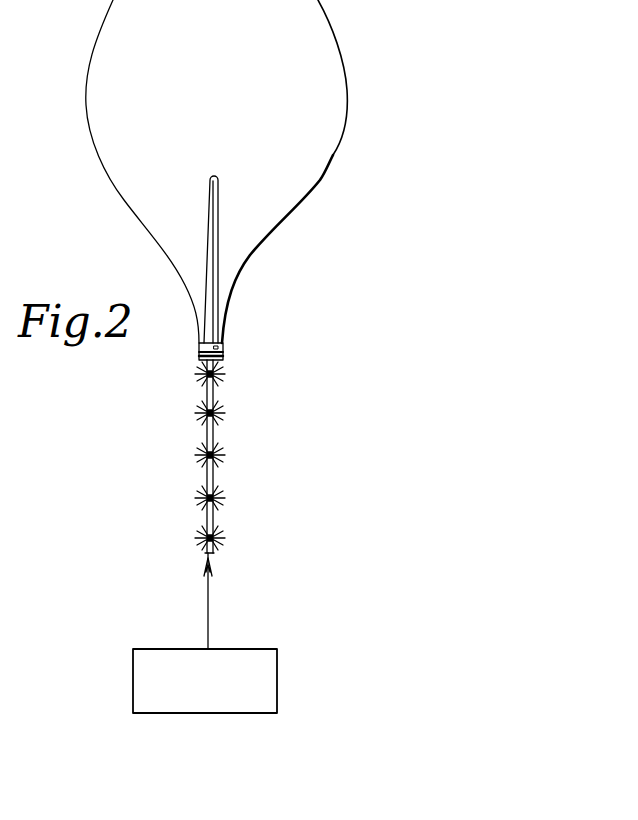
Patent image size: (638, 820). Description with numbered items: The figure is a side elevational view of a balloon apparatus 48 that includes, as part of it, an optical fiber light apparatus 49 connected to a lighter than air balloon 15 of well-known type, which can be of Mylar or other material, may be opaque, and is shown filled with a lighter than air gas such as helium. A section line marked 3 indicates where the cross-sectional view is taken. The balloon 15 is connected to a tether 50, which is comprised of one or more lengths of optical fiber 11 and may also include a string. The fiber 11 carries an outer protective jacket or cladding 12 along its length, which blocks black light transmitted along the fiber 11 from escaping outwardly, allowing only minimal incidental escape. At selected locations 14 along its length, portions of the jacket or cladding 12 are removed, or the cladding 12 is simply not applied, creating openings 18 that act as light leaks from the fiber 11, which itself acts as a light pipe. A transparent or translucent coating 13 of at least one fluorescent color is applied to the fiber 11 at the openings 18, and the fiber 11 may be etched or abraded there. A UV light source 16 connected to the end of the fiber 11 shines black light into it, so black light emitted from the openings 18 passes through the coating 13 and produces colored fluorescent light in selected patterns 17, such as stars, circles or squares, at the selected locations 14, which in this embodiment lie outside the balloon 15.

The section line 3- 3 is at (165, 497).
The optical fiber 11 is at (214, 202).
The outer protective jacket or cladding 12 is at (215, 243).
The transparent or translucent fluorescent coating 13 is at (214, 409).
The selected locations 14 is at (207, 408).
The lighter than air balloon 15 is at (313, 190).
The UV light source 16 is at (278, 682).
The patterns 17 is at (265, 356).
The openings 18 is at (206, 414).
The balloon apparatus 48 is at (60, 152).
The optical fiber light apparatus 49 is at (320, 398).
The tether 50 is at (205, 518).